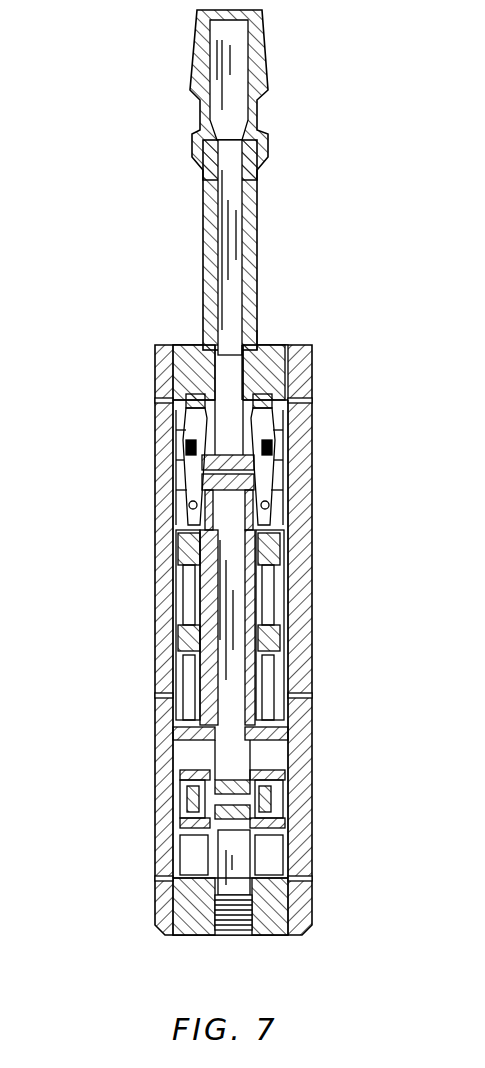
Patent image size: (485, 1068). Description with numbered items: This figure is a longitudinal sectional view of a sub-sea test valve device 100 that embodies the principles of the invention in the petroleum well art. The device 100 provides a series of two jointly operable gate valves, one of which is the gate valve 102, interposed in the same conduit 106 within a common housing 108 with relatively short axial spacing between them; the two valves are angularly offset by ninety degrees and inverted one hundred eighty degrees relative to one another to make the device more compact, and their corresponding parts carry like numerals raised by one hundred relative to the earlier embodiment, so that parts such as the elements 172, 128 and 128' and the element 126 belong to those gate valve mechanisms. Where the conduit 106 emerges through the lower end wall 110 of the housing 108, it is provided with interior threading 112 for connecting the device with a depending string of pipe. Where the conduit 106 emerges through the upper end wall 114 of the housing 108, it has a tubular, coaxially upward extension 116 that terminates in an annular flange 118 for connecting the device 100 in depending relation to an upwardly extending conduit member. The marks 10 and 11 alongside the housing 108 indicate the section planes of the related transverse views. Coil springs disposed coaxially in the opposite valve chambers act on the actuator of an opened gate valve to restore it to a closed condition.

The device 100 is at (135, 750).
The annular flange 118 is at (268, 88).
The tubular coaxially upward extension 116 is at (256, 258).
The conduit 106 is at (258, 340).
The upper end wall 114 is at (199, 345).
The gate valve 102 is at (203, 443).
The retainer blocks 172 is at (203, 473).
The upper collar 128 is at (163, 485).
The housing 108 is at (305, 498).
The section line 10 is at (122, 537).
The section line 11 is at (128, 630).
The slip sub-assemblies 126 is at (178, 622).
The lower collar 128' is at (285, 817).
The lower end wall 110 is at (268, 930).
The interior threading 112 is at (225, 935).